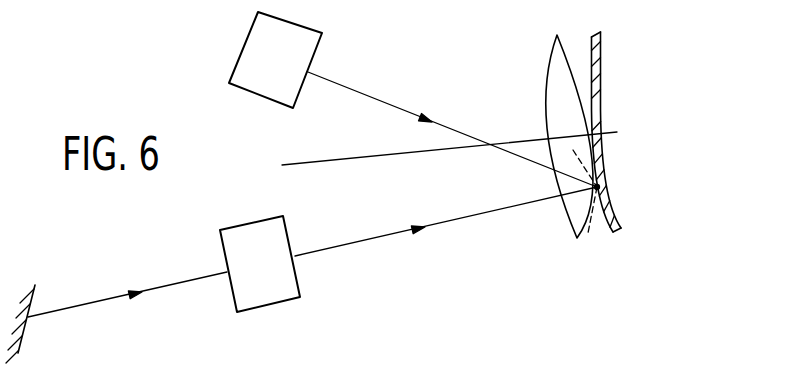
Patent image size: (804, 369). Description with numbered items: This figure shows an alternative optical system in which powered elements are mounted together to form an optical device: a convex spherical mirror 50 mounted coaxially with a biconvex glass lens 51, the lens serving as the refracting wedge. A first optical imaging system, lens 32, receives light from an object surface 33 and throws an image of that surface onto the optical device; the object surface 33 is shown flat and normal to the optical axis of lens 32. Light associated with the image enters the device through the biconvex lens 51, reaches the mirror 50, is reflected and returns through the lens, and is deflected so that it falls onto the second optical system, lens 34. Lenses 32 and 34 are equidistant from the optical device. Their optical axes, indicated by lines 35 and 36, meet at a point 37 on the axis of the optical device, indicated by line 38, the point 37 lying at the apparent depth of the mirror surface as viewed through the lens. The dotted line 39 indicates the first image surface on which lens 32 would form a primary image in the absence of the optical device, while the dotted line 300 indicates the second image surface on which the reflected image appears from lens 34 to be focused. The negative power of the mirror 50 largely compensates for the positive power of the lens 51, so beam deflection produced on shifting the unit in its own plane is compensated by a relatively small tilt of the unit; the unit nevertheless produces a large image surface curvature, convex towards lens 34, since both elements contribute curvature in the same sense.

The lens 32 is at (260, 264).
The object surface 33 is at (40, 290).
The lens 34 is at (275, 60).
The optical axis 35 is at (465, 216).
The optical axis 36 is at (400, 106).
The point 37 is at (597, 187).
The axis of the optical device 38 is at (378, 158).
The first image surface 39 is at (620, 212).
The convex spherical mirror 50 is at (601, 40).
The biconvex glass lens 51 is at (552, 50).
The second image surface 300 is at (615, 158).